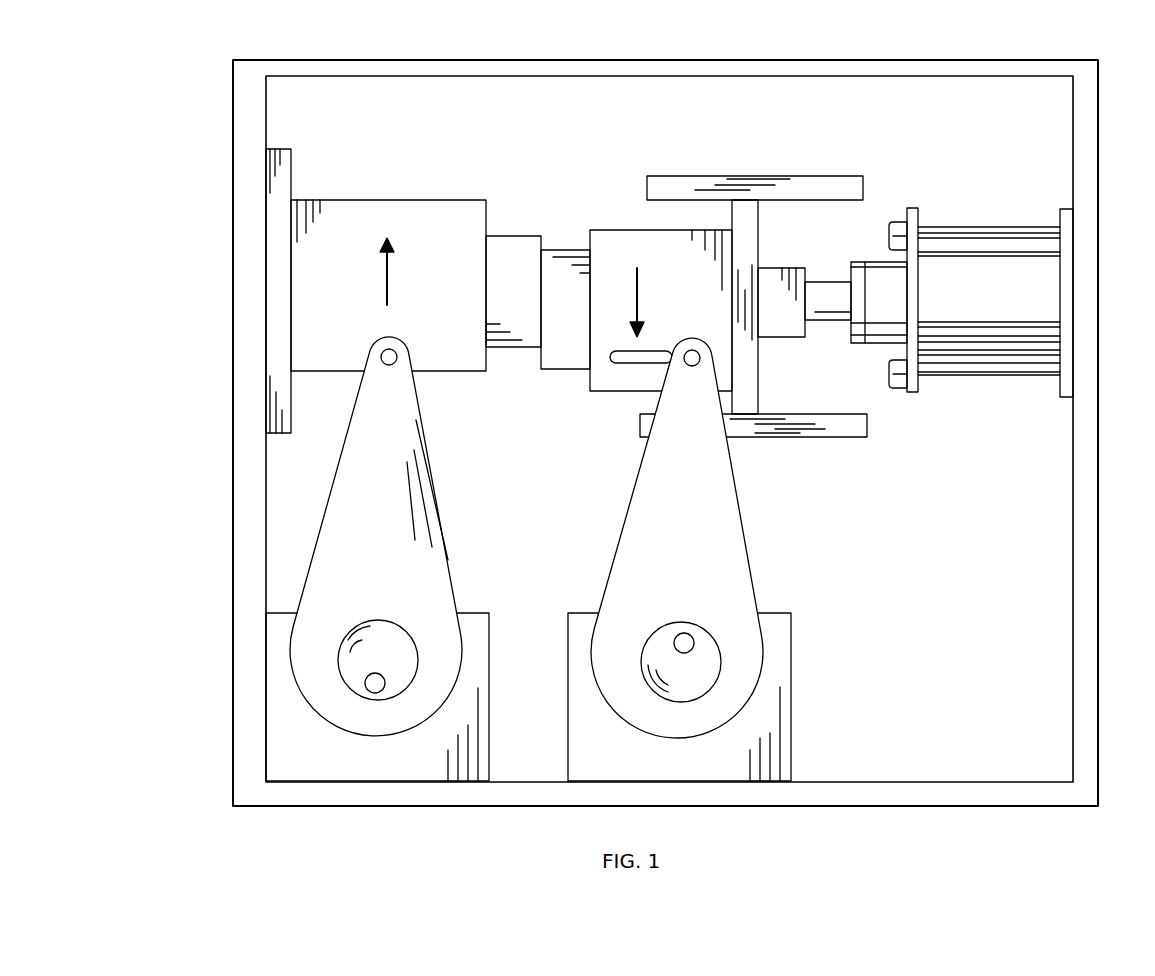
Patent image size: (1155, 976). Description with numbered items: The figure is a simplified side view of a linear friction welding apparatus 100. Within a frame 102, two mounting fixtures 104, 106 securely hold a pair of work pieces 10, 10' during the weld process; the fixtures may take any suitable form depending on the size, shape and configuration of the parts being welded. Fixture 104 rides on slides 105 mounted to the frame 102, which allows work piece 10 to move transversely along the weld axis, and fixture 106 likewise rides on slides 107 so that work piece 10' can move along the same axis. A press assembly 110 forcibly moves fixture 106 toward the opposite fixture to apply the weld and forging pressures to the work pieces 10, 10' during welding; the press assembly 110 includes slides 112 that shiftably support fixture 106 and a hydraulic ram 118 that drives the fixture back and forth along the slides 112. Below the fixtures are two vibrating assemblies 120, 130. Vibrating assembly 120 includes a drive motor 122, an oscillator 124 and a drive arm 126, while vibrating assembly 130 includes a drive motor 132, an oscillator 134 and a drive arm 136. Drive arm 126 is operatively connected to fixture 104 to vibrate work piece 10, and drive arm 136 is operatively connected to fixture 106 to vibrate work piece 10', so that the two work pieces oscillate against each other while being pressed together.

The linear friction welding apparatus 100 is at (87, 193).
The frame 102 is at (237, 240).
The mounting fixture 104 is at (395, 205).
The slides 105 is at (283, 162).
The mounting fixture 106 is at (612, 233).
The slides 107 is at (748, 278).
The press assembly 110 is at (916, 182).
The slides 112 is at (832, 180).
The hydraulic ram 118 is at (970, 362).
The work piece 10 is at (513, 266).
The work piece 10' is at (565, 284).
The vibrating assembly 120 is at (343, 536).
The drive motor 122 is at (283, 735).
The oscillator 124 is at (410, 630).
The drive arm 126 is at (405, 432).
The vibrating assembly 130 is at (716, 538).
The drive motor 132 is at (778, 662).
The oscillator 134 is at (648, 638).
The drive arm 136 is at (650, 540).